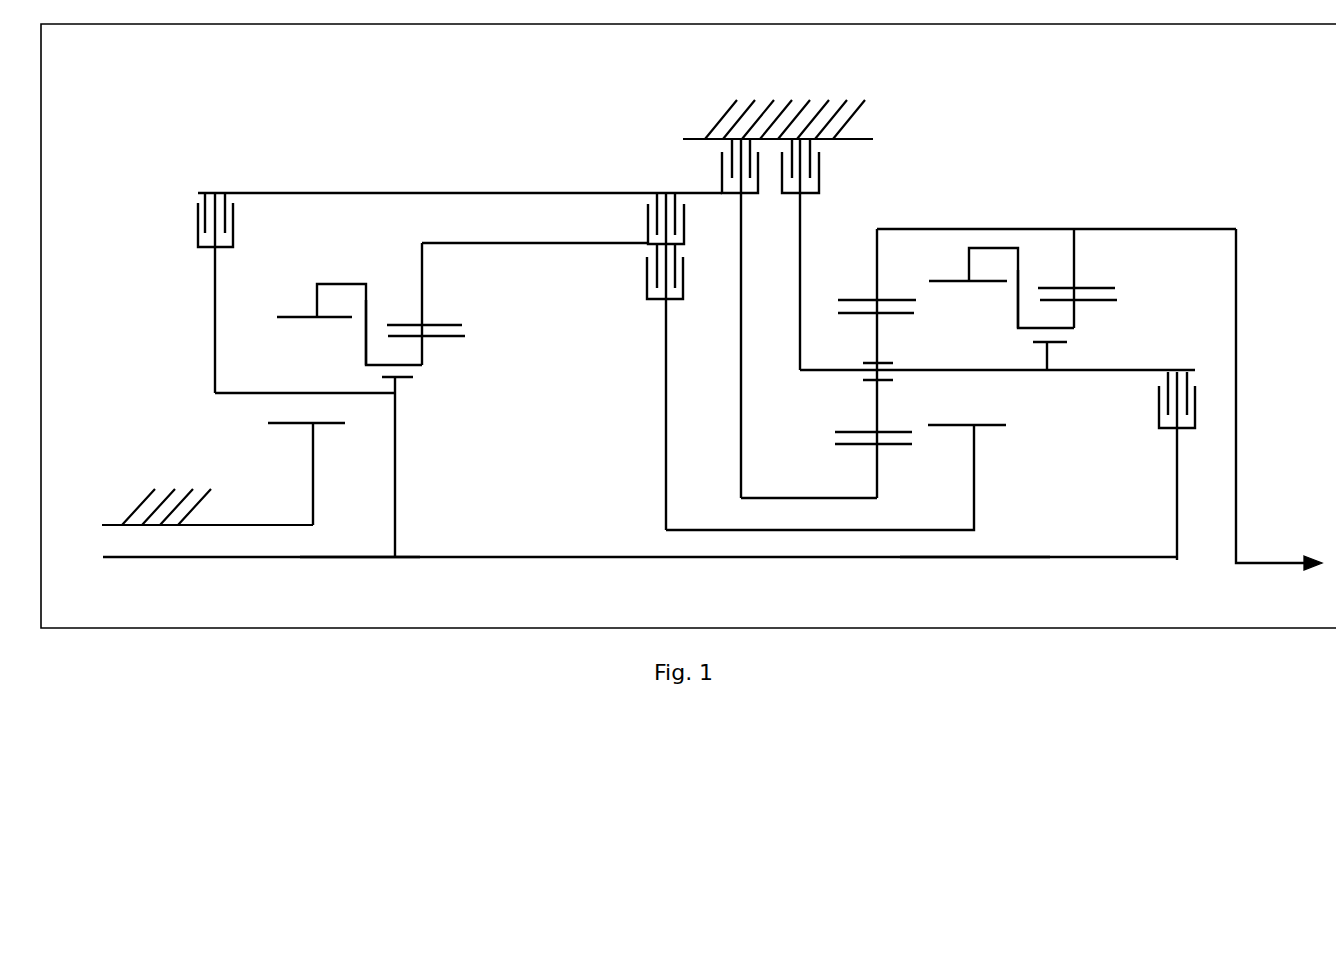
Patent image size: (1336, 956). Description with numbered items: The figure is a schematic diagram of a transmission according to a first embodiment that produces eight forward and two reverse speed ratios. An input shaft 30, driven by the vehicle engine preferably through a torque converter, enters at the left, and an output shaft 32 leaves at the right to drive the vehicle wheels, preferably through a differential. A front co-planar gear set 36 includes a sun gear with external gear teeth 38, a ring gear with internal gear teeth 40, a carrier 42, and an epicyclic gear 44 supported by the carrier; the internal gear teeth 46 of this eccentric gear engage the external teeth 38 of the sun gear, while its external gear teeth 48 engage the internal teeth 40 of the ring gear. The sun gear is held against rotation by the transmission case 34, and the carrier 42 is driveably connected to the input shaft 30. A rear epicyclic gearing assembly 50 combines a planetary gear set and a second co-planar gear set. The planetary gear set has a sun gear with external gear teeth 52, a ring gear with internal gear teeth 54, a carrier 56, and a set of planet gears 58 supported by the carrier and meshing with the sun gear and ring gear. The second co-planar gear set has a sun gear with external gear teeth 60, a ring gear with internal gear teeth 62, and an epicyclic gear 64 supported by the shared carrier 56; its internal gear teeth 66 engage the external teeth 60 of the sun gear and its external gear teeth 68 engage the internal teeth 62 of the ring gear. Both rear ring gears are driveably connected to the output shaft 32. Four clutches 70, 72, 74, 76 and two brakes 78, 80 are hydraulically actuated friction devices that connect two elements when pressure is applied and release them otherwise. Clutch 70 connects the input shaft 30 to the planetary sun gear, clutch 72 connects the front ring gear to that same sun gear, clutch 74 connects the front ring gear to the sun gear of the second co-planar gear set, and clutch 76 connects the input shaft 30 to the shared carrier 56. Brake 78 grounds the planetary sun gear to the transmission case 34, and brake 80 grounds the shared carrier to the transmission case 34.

The input shaft 30 is at (618, 557).
The output shaft 32 is at (1258, 560).
The transmission case 34 is at (716, 122).
The front co-planar gear set 36 is at (360, 584).
The external gear teeth of sun gear 38 is at (293, 425).
The internal gear teeth of ring gear 40 is at (440, 325).
The carrier 42 is at (395, 446).
The epicyclic gear 44 is at (368, 345).
The internal gear teeth of eccentric gear 46 is at (286, 317).
The external gear teeth of eccentric gear 48 is at (450, 340).
The rear epicyclic gearing assembly 50 is at (975, 584).
The external gear teeth of sun gear 52 is at (852, 450).
The internal gear teeth of ring gear 54 is at (853, 300).
The carrier 56 is at (1078, 373).
The planet gears 58 is at (877, 410).
The external gear teeth of sun gear 60 is at (992, 428).
The internal gear teeth of ring gear 62 is at (1093, 284).
The epicyclic gear 64 is at (1018, 307).
The internal gear teeth of eccentric gear 66 is at (940, 281).
The external gear teeth of eccentric gear 68 is at (1103, 303).
The clutch 70 is at (198, 228).
The clutch 72 is at (646, 217).
The clutch 74 is at (647, 277).
The clutch 76 is at (1159, 398).
The brake 78 is at (722, 180).
The brake 80 is at (819, 176).